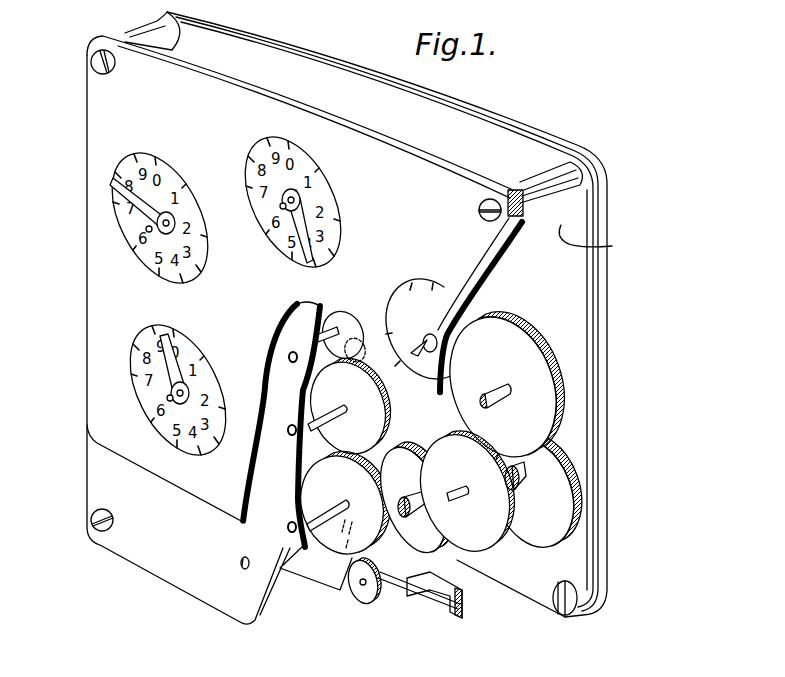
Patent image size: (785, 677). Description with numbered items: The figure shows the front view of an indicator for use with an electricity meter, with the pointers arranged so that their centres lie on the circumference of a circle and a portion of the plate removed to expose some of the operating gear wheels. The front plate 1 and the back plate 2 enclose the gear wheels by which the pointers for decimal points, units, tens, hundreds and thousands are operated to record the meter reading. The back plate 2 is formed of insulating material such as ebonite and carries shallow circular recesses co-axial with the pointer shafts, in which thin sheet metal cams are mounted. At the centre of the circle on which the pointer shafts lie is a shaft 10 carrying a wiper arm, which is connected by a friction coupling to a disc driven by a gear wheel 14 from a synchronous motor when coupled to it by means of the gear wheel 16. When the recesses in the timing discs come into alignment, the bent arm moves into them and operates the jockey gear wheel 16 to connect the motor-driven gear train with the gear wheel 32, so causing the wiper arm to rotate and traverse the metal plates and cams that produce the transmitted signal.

The front plate 1 is at (97, 142).
The back plate 2 is at (340, 67).
The shaft 10 is at (336, 320).
The gear wheel 14 is at (350, 345).
The gear wheel 32 is at (323, 492).
The jockey gear wheel 16 is at (361, 592).